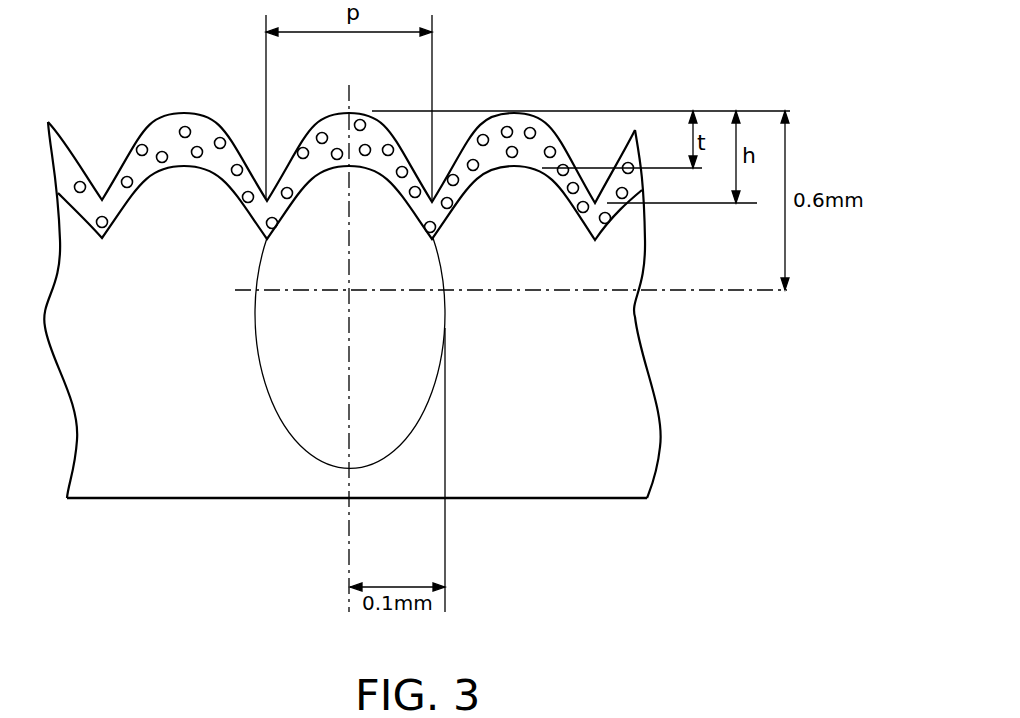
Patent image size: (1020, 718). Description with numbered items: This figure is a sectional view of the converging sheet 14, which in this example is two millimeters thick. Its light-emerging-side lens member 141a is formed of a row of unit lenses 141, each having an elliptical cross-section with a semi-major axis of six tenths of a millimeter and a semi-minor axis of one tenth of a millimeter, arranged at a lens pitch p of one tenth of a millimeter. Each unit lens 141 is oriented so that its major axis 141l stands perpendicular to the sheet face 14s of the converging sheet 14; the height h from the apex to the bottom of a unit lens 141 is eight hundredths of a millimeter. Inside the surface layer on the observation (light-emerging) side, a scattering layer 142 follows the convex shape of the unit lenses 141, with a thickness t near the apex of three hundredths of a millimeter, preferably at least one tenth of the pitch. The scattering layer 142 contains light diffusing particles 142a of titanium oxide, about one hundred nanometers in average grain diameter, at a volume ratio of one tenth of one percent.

The converging sheet 14 is at (557, 465).
The sheet face 14s is at (208, 498).
The unit lens 141 is at (183, 202).
The light-emerging-side lens member 141a is at (577, 103).
The major axis 141l is at (350, 358).
The scattering layer 142 is at (173, 143).
The light diffusing particles 142a is at (484, 134).